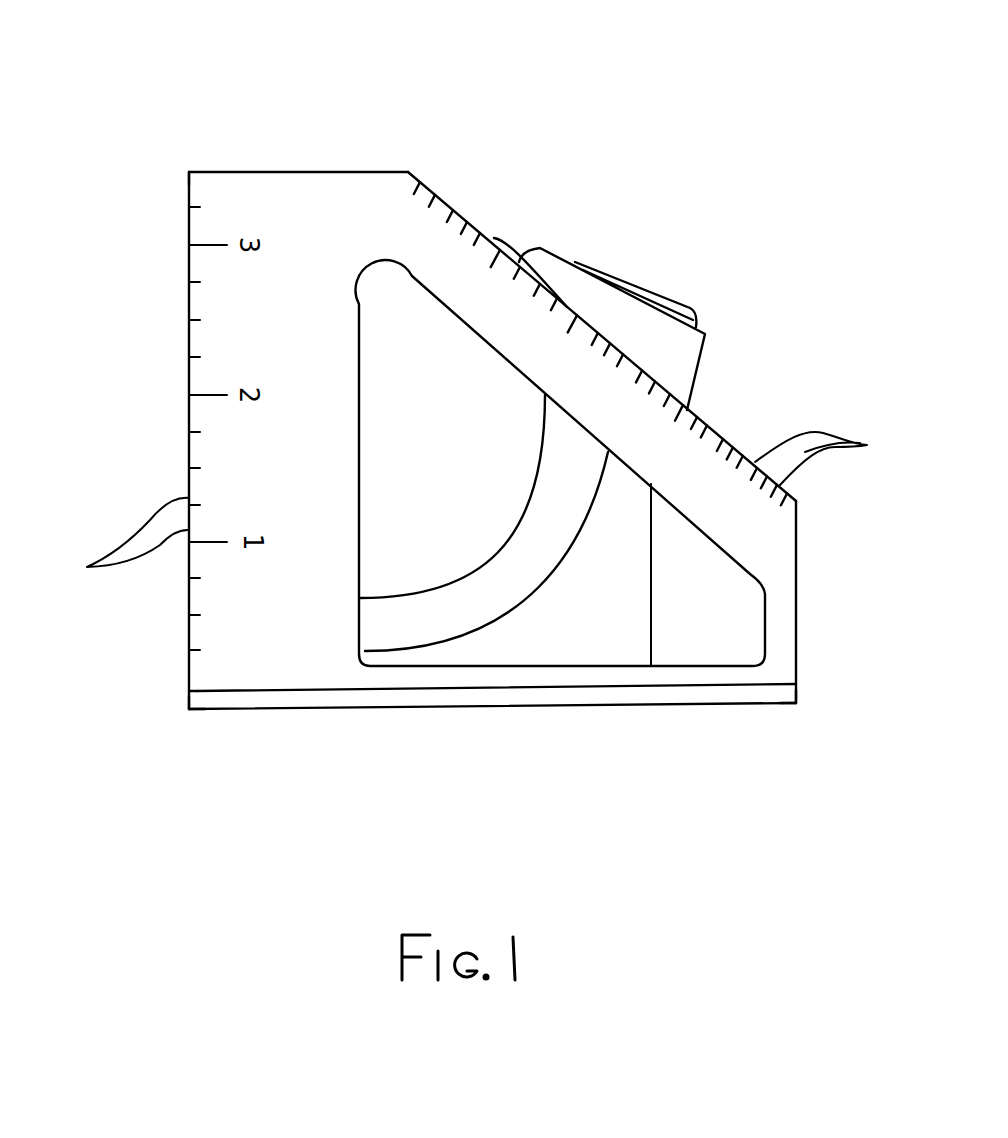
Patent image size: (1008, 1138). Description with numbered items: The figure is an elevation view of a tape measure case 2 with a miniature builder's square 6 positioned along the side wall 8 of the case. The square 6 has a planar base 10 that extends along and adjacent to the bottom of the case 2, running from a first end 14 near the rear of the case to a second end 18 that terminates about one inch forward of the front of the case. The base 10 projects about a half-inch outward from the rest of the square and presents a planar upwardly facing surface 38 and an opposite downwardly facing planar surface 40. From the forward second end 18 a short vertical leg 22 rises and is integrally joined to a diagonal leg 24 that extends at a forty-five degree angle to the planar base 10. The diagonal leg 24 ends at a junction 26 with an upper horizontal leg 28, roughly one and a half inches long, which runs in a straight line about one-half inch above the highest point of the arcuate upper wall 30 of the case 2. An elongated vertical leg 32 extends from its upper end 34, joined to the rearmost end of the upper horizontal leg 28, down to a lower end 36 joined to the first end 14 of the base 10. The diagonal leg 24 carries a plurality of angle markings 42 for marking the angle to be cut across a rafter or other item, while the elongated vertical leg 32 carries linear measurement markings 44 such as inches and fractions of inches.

The tape measure case 2 is at (617, 635).
The miniature builder's square 6 is at (268, 190).
The side wall 8 is at (493, 643).
The planar base 10 is at (320, 702).
The first end 14 is at (189, 702).
The second end 18 is at (796, 685).
The vertical leg 22 is at (796, 572).
The diagonal leg 24 is at (697, 448).
The junction 26 is at (408, 174).
The upper horizontal leg 28 is at (326, 175).
The arcuate upper wall 30 is at (505, 240).
The elongated vertical leg 32 is at (189, 375).
The upper end 34 is at (189, 180).
The lower end 36 is at (189, 689).
The upwardly facing surface 38 is at (267, 690).
The downwardly facing planar surface 40 is at (392, 708).
The angle markings 42 is at (867, 445).
The linear measurement markings 44 is at (111, 539).